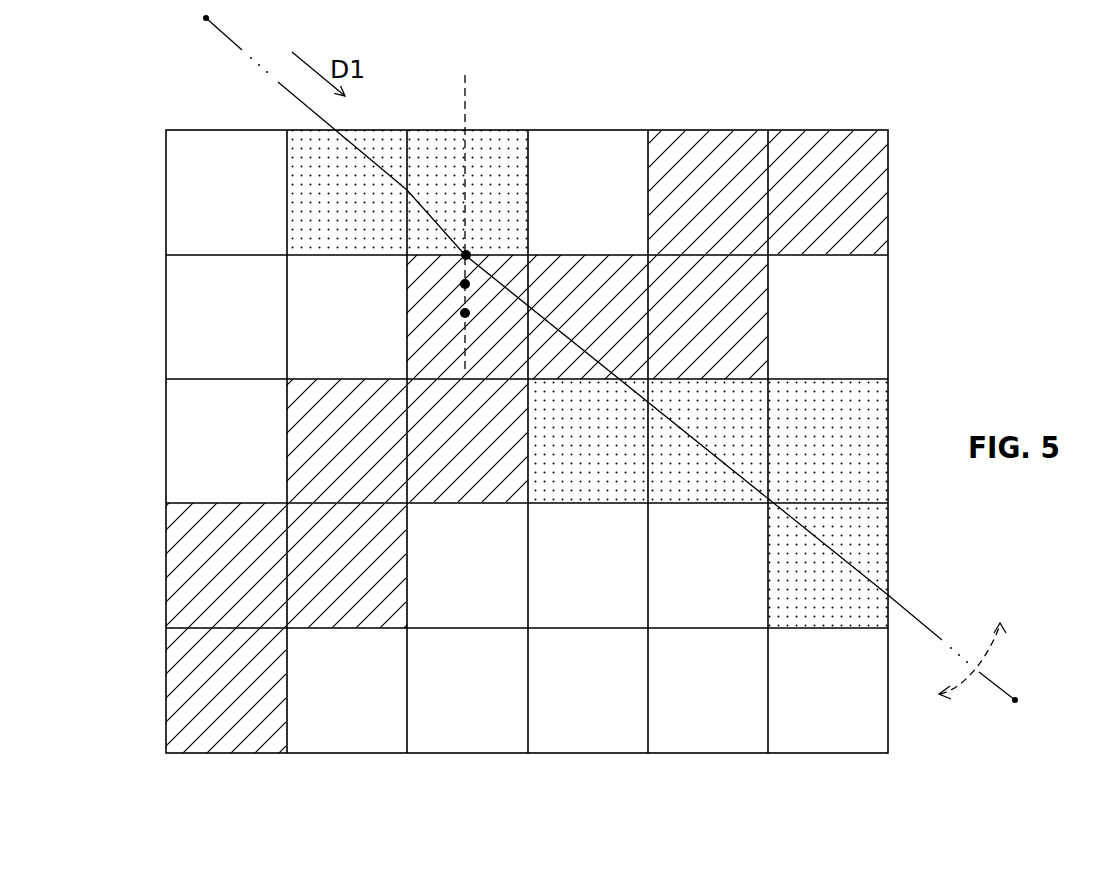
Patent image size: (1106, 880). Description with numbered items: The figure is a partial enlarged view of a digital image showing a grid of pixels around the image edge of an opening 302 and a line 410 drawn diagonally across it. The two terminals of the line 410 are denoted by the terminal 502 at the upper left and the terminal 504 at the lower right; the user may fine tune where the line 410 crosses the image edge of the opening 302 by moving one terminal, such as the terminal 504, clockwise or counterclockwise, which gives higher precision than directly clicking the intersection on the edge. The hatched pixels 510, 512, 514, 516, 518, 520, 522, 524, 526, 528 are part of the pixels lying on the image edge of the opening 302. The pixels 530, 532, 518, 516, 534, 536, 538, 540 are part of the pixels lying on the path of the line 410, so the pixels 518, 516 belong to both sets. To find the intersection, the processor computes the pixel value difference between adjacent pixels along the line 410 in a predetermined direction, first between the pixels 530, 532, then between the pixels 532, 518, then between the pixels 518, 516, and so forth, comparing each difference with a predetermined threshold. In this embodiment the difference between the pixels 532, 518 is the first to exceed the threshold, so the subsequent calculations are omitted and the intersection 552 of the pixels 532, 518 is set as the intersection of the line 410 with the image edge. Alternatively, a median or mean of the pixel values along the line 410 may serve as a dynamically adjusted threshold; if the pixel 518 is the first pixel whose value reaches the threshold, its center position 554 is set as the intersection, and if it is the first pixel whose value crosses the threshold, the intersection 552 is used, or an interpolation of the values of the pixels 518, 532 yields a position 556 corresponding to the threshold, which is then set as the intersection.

The opening 302 is at (835, 131).
The line 410 is at (917, 608).
The terminal of the line 502 is at (206, 20).
The terminal of the line 504 is at (1016, 702).
The pixel 510 is at (859, 207).
The pixel 512 is at (734, 207).
The pixel 514 is at (737, 338).
The pixel 516 is at (644, 295).
The pixel 518 is at (462, 373).
The pixel 520 is at (496, 460).
The pixel 522 is at (371, 460).
The pixel 524 is at (371, 587).
The pixel 526 is at (251, 587).
The pixel 528 is at (252, 711).
The pixel 530 is at (347, 248).
The pixel 532 is at (522, 168).
The pixel 534 is at (617, 460).
The pixel 536 is at (709, 494).
The pixel 538 is at (853, 460).
The pixel 540 is at (824, 617).
The intersection of the pixels 552 is at (468, 250).
The center position of the pixel 554 is at (460, 314).
The position corresponding to the threshold 556 is at (460, 284).